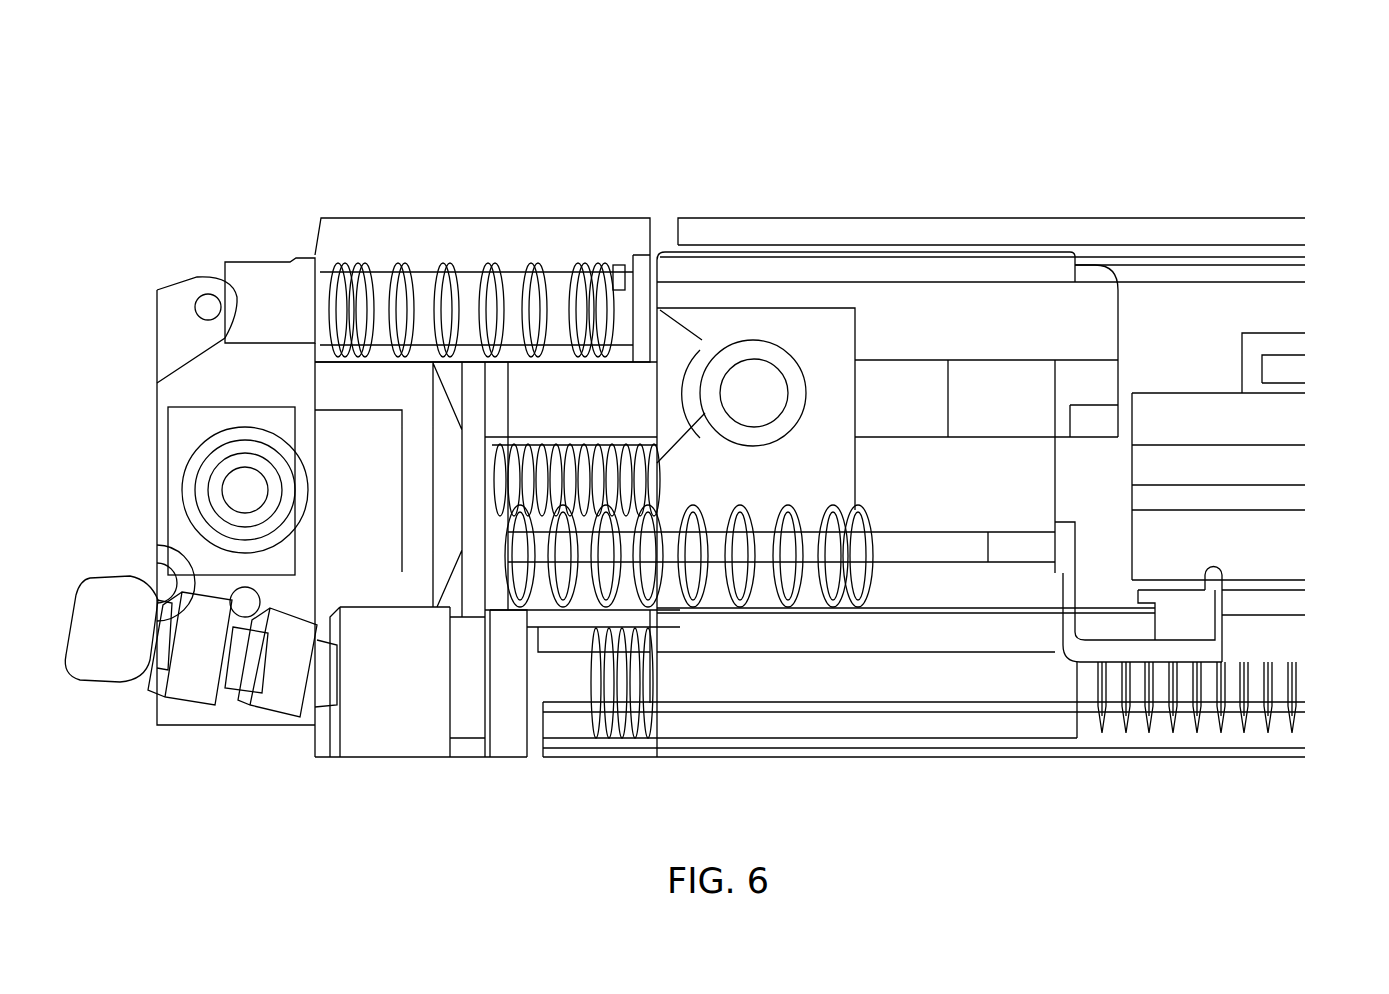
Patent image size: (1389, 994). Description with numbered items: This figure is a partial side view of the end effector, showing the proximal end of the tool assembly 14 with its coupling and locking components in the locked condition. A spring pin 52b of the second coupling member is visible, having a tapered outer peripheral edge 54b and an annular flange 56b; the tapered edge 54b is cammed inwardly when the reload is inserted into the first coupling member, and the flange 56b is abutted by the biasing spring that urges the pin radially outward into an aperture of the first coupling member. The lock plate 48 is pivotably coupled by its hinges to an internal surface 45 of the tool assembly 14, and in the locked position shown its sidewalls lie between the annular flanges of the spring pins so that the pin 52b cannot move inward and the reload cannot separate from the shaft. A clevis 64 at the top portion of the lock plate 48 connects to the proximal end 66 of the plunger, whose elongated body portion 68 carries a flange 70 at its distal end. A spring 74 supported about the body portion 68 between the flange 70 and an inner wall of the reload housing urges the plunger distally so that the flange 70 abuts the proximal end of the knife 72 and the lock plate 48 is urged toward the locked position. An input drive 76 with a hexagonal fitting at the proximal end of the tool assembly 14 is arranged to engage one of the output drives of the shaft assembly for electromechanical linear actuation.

The tool assembly 14 is at (1283, 125).
The internal surface 45 is at (160, 725).
The lock plate 48 is at (158, 383).
The spring pin 52b is at (222, 455).
The tapered outer peripheral edge 54b is at (222, 483).
The annular flange 56b is at (248, 437).
The clevis 64 is at (158, 310).
The proximal end 66 is at (262, 262).
The elongated body portion 68 is at (497, 290).
The flange 70 is at (640, 290).
The knife 72 is at (838, 250).
The spring 74 is at (538, 290).
The input drive 76 is at (92, 613).